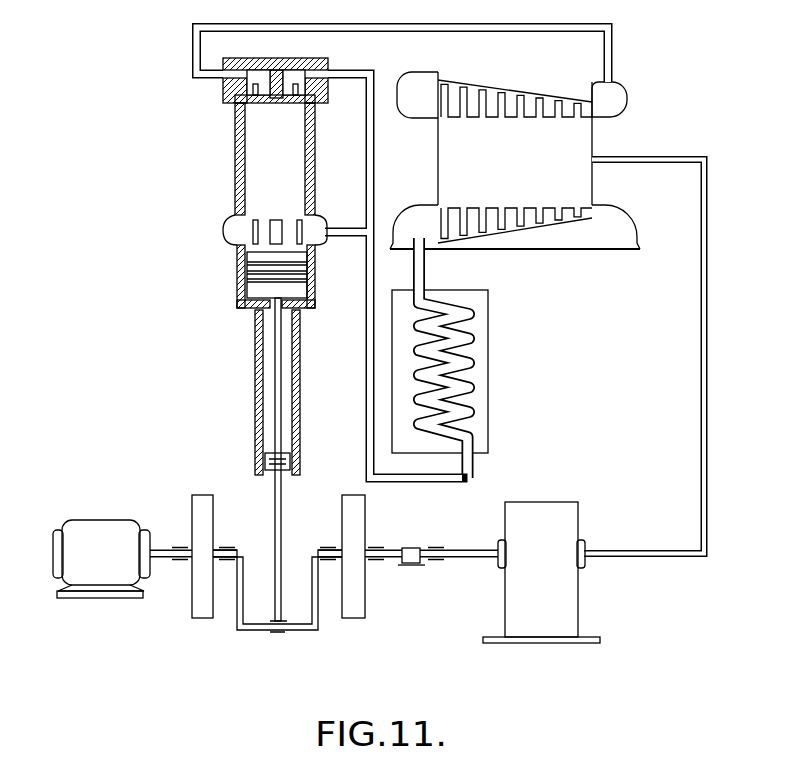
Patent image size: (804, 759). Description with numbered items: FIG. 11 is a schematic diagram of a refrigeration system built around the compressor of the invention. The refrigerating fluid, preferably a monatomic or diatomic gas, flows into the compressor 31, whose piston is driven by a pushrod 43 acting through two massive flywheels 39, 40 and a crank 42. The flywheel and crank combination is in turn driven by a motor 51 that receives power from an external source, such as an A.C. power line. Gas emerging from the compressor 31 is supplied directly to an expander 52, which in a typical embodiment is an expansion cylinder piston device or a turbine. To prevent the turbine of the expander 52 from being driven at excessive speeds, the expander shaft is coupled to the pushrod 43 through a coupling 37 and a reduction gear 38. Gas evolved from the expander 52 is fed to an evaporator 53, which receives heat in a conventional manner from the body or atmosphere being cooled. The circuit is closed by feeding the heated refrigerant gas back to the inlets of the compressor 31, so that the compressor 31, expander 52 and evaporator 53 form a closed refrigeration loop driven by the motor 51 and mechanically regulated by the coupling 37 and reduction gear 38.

The compressor 31 is at (221, 163).
The coupling 37 is at (662, 157).
The reduction gear 38 is at (552, 577).
The flywheel 39 is at (358, 612).
The flywheel 40 is at (200, 618).
The crank 42 is at (295, 632).
The pushrod 43 is at (275, 522).
The motor 51 is at (83, 533).
The expander 52 is at (572, 163).
The evaporator 53 is at (482, 355).